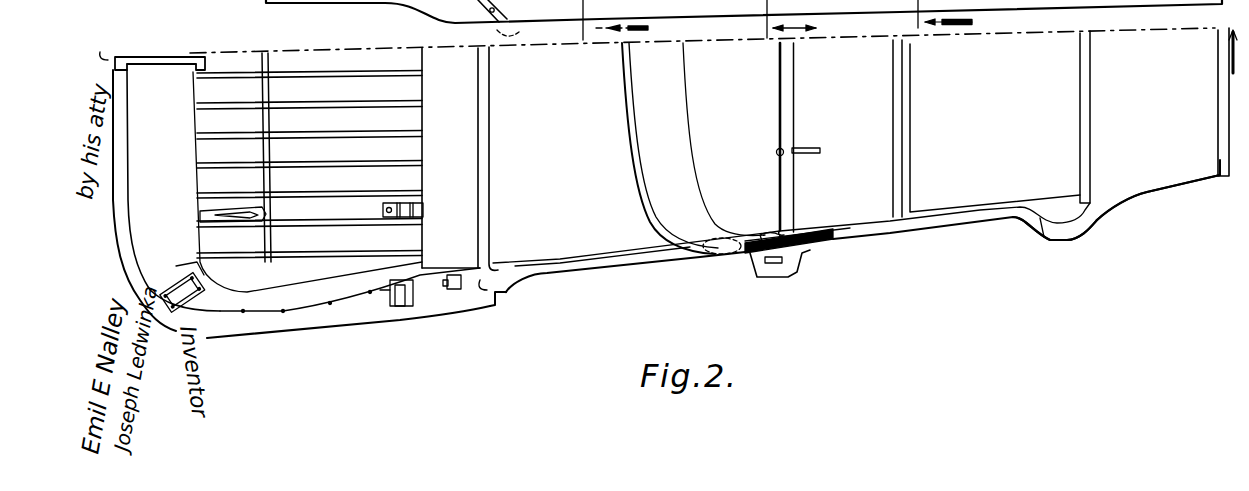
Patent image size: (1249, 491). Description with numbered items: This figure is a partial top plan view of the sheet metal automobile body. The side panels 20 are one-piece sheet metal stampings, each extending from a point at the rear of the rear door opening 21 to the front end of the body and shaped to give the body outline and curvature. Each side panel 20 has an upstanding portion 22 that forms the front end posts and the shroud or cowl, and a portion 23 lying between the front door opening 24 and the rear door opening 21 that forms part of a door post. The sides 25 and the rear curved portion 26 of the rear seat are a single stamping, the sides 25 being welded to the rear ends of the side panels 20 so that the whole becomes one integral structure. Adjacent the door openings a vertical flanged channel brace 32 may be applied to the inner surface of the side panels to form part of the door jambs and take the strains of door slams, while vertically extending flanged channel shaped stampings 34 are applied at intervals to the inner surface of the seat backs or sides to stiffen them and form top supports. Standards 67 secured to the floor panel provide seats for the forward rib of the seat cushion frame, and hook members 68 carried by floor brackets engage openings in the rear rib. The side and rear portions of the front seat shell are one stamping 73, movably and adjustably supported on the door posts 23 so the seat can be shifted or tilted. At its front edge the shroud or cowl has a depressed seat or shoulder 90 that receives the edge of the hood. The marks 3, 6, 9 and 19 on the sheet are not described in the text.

The section line 3- 3 is at (658, 39).
The rear curved portion 26 is at (156, 48).
The flanged channel shaped stampings 34 is at (166, 70).
The hook members 68 is at (247, 207).
The standards 67 is at (451, 158).
The front seat shell 73 is at (643, 128).
The front door 6 is at (566, 37).
The door 19 is at (779, 127).
The rear door post 9 is at (986, 114).
The seat or shoulder 90 is at (1215, 94).
The upstanding portion 22 is at (1139, 191).
The front door opening 24 is at (1006, 239).
The door post portion 23 is at (789, 258).
The rear door opening 21 is at (856, 239).
The vertical flanged channel brace 32 is at (490, 291).
The side panels 20 is at (478, 294).
The sides of the rear seat 25 is at (375, 320).